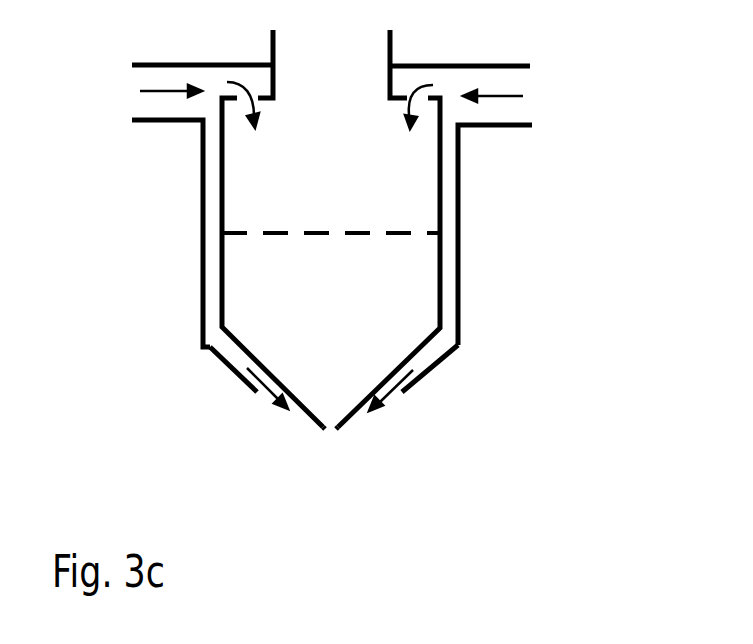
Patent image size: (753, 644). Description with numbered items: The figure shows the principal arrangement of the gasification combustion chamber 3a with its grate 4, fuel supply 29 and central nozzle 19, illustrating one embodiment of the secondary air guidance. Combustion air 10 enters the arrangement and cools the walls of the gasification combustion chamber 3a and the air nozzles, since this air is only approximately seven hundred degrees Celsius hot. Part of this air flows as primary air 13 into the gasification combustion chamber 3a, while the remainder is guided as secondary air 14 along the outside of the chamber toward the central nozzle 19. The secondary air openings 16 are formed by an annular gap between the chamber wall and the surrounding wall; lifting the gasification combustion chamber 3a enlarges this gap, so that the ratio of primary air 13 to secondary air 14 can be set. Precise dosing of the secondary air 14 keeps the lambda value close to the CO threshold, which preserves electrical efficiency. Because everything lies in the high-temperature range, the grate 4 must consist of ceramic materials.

The fuel supply 29 is at (365, 48).
The combustion air 10 is at (168, 90).
The primary air 13 is at (247, 106).
The gasification combustion chamber 3a is at (440, 182).
The grate 4 is at (400, 232).
The secondary air openings 16 is at (222, 350).
The secondary air 14 is at (267, 390).
The central nozzle 19 is at (332, 424).